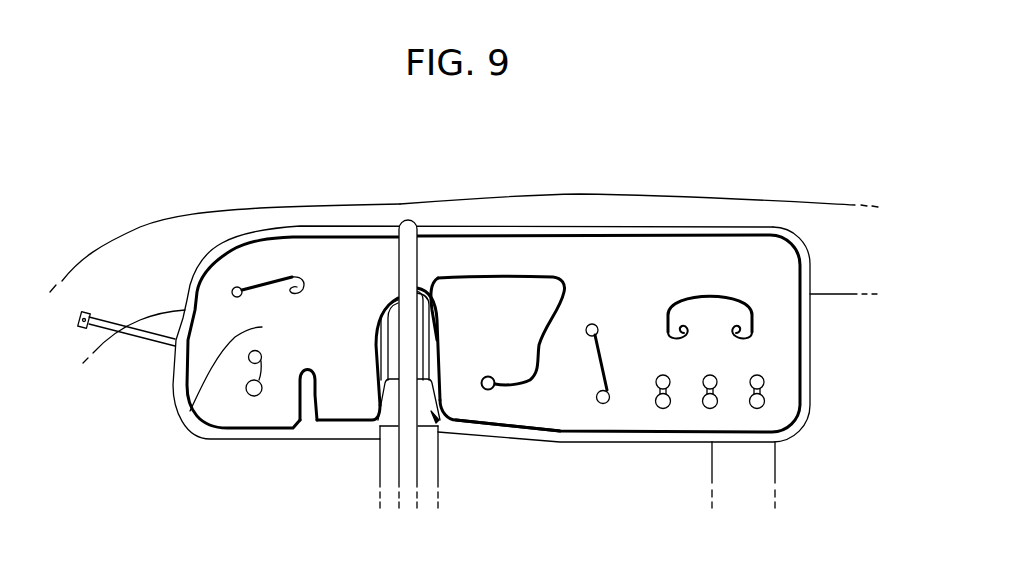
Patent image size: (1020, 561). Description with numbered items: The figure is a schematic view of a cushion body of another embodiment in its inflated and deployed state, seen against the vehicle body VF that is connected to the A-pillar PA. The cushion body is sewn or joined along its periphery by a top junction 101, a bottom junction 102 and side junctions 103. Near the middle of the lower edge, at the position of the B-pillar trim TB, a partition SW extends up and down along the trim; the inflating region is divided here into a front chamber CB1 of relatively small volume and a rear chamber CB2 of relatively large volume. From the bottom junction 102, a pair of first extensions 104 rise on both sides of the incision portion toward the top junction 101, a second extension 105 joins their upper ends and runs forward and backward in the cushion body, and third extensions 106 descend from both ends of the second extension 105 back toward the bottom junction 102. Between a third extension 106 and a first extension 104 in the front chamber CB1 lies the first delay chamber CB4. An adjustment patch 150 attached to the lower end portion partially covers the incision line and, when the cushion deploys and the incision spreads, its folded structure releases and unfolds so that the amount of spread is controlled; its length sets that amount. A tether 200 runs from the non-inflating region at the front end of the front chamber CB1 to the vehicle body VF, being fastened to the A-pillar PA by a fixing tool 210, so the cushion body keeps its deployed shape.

The A-pillar PA is at (112, 263).
The vehicle body VF is at (562, 206).
The top junction 101 is at (707, 233).
The bottom junction 102 is at (236, 439).
The side junctions 103 is at (812, 357).
The first extensions 104 is at (377, 341).
The second extension 105 is at (473, 276).
The third extensions 106 is at (541, 348).
The adjustment patch 150 is at (438, 424).
The tether 200 is at (140, 312).
The fixing tool 210 is at (83, 311).
The B-pillar trim TB is at (382, 458).
The partition SW is at (414, 463).
The front chamber CB1 is at (181, 419).
The rear chamber CB2 is at (640, 358).
The first delay chamber CB4 is at (367, 357).